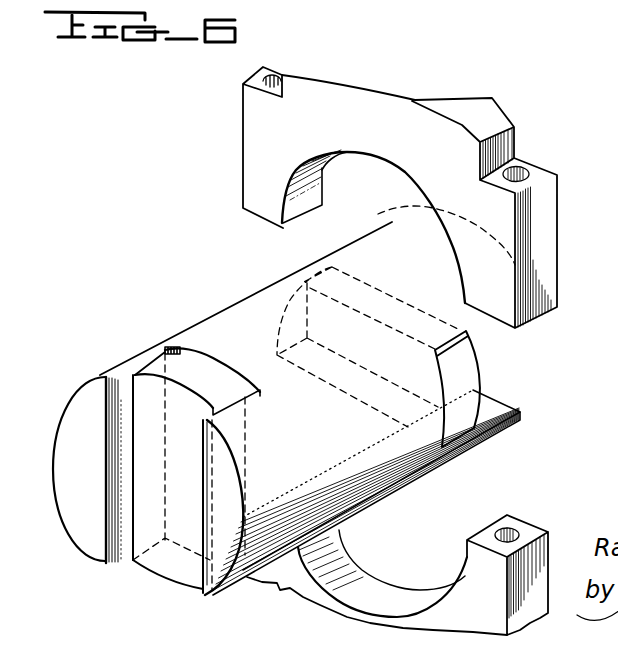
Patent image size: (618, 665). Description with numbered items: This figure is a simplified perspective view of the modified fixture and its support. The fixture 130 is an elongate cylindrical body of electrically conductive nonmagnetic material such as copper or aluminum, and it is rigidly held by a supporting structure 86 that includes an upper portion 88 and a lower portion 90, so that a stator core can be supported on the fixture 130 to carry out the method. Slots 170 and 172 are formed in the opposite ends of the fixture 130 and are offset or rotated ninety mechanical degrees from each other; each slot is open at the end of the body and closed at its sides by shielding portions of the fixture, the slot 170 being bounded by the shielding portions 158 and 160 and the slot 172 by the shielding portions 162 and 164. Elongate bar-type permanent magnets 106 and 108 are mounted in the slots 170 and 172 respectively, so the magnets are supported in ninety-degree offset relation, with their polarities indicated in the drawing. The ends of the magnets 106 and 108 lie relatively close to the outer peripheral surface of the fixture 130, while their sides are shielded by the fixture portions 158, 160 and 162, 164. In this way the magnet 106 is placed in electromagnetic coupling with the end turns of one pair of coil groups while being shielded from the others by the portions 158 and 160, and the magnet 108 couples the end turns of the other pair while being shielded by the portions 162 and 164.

The supporting structure 86 is at (403, 197).
The upper portion 88 is at (265, 181).
The lower portion 90 is at (480, 562).
The permanent magnet 106 is at (492, 360).
The permanent magnet 108 is at (152, 481).
The fixture 130 is at (307, 408).
The shielding portion 158 is at (392, 227).
The shielding portion 160 is at (483, 438).
The shielding portion 162 is at (78, 463).
The shielding portion 164 is at (232, 442).
The slot 170 is at (500, 407).
The slot 172 is at (122, 560).